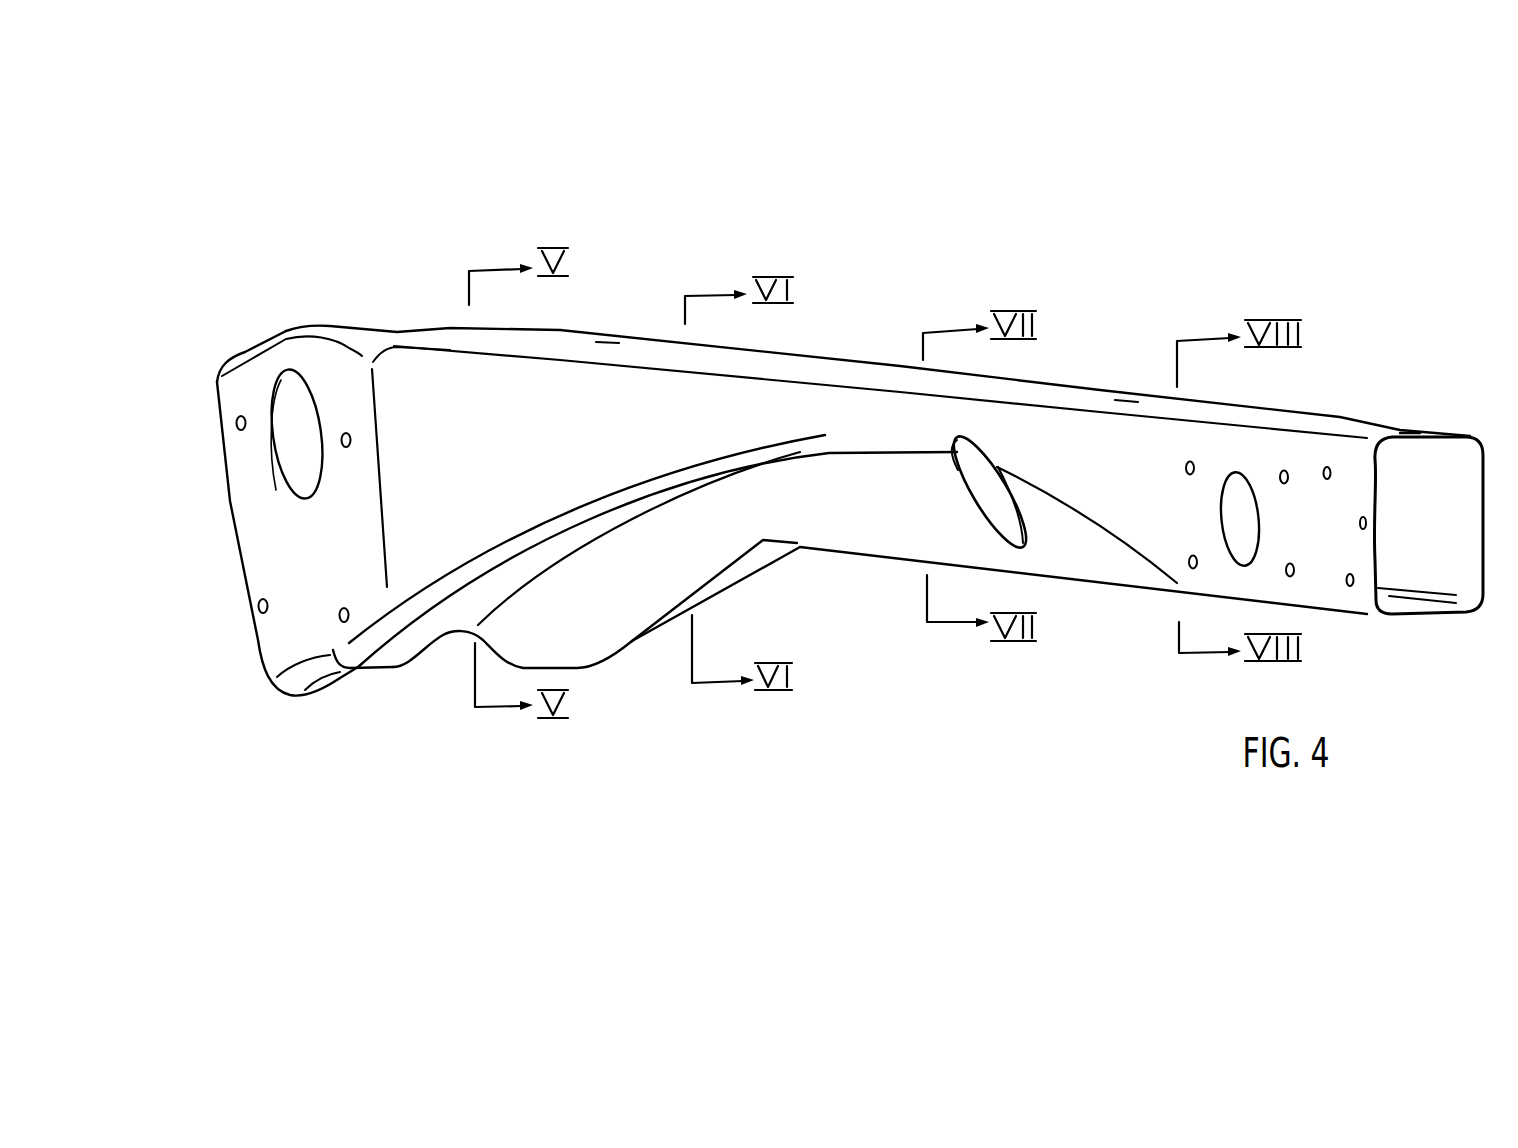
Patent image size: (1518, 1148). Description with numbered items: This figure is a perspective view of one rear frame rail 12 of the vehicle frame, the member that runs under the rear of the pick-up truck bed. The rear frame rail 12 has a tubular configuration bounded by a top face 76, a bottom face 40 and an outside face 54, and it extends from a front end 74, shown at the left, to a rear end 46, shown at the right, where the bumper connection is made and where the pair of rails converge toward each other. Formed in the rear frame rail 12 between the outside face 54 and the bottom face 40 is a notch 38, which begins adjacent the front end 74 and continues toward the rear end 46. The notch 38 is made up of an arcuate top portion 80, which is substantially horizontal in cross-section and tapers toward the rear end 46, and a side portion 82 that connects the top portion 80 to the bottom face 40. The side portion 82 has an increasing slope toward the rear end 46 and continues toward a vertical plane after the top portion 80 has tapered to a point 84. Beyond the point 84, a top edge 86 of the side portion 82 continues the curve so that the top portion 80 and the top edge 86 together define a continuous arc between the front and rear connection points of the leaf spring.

The rear frame rail 12 is at (1073, 385).
The notch 38 is at (813, 524).
The bottom face 40 is at (1404, 621).
The rear end 46 is at (1356, 413).
The outside face 54 is at (599, 382).
The front end 74 is at (281, 331).
The top face 76 is at (1283, 418).
The arcuate top portion 80 is at (573, 535).
The side portion 82 is at (875, 528).
The point 84 is at (920, 448).
The top edge 86 is at (1059, 495).